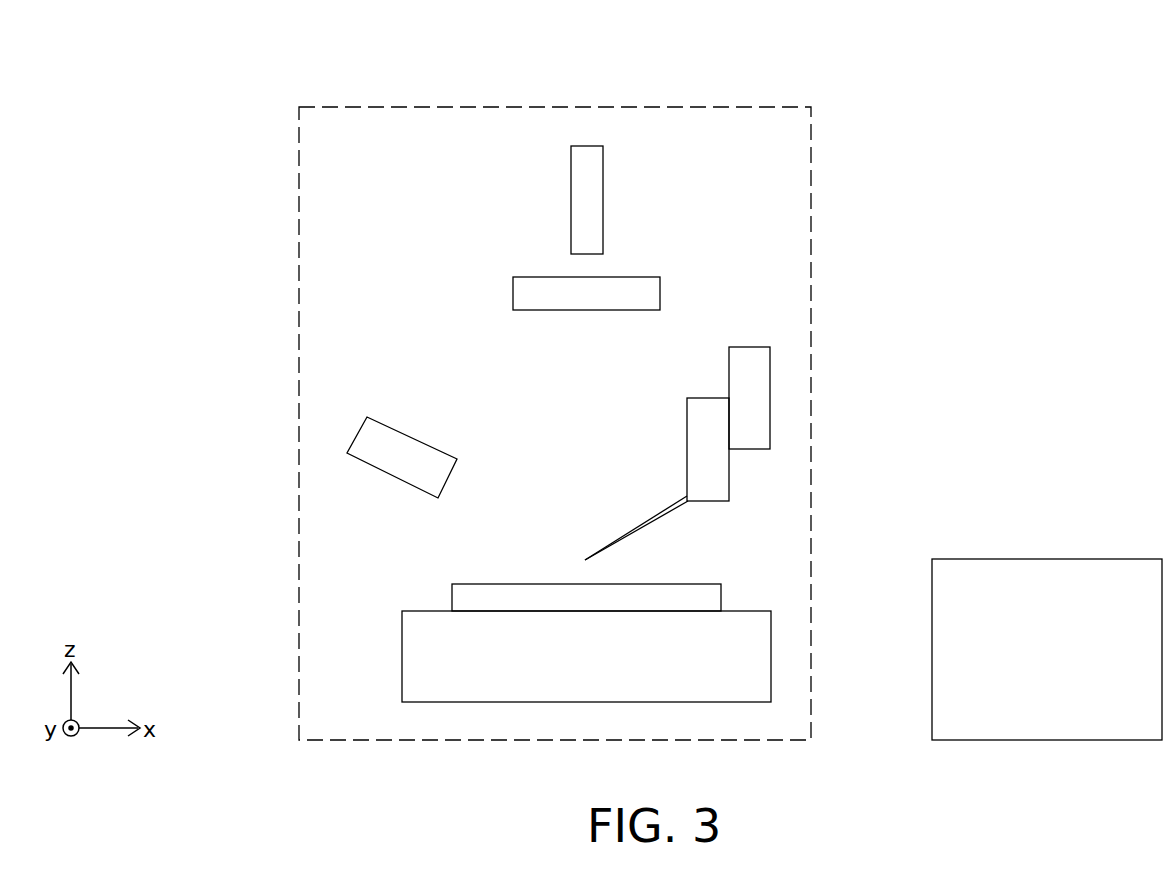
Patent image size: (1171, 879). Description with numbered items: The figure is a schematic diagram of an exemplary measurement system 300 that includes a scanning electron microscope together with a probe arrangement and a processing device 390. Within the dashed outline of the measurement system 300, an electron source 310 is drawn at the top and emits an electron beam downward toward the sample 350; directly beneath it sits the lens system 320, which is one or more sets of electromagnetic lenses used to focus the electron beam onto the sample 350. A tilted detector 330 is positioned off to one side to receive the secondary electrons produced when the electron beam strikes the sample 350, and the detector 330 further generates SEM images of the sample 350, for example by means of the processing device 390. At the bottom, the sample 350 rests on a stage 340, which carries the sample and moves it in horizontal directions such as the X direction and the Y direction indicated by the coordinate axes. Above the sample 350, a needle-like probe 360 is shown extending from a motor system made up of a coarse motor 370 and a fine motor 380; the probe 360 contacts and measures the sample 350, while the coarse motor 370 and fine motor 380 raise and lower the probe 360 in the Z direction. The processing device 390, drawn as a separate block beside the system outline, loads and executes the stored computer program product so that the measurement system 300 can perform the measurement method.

The measurement system 300 is at (767, 76).
The electron source 310 is at (604, 201).
The lens system 320 is at (661, 296).
The detector 330 is at (410, 437).
The stage 340 is at (772, 655).
The sample 350 is at (722, 594).
The probe 360 is at (640, 525).
The coarse motor 370 is at (771, 397).
The fine motor 380 is at (730, 477).
The processing device 390 is at (1070, 665).